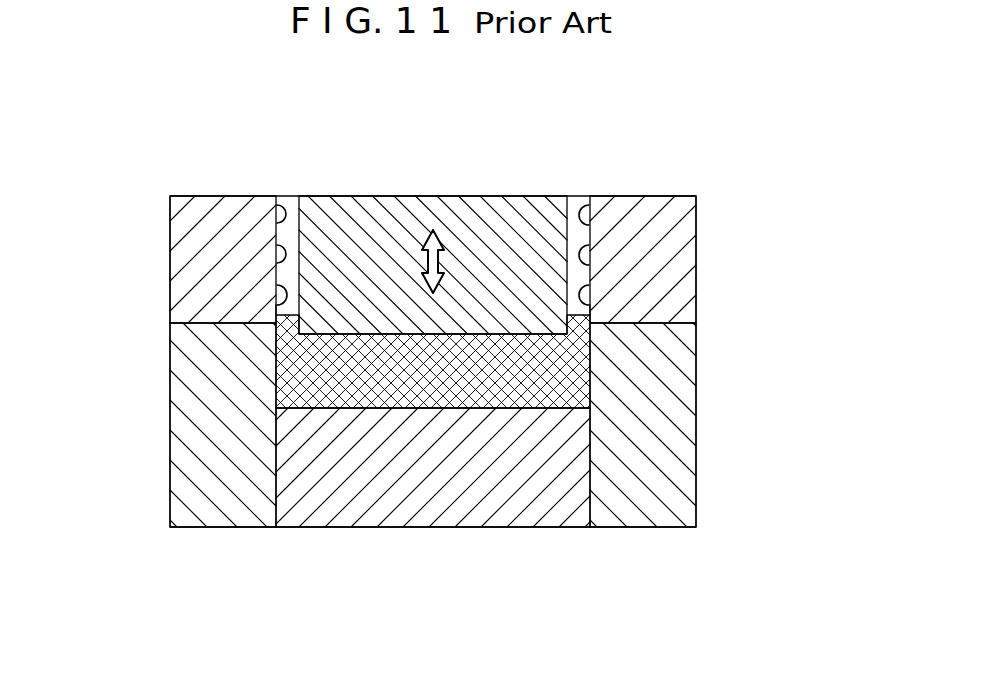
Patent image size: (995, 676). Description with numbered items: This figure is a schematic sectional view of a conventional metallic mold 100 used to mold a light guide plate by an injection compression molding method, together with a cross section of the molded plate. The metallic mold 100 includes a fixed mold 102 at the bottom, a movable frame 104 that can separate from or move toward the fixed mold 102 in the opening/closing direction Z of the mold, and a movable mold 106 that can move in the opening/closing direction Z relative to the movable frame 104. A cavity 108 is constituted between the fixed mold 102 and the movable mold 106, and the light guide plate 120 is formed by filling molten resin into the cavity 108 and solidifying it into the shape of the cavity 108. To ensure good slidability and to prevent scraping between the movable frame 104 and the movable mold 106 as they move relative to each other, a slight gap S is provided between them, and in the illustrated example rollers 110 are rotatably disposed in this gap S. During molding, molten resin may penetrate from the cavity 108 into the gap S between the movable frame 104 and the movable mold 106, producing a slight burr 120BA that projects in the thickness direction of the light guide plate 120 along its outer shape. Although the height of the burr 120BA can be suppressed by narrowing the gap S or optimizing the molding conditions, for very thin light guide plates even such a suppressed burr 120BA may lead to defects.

The metallic mold 100 is at (716, 161).
The fixed mold 102 is at (547, 527).
The movable frame 104 is at (696, 247).
The movable mold 106 is at (399, 196).
The cavity 108 is at (482, 375).
The rollers 110 is at (578, 199).
The light guide plate 120 is at (372, 408).
The burr 120BA is at (277, 297).
The gap S is at (290, 193).
The opening/closing direction Z is at (441, 258).